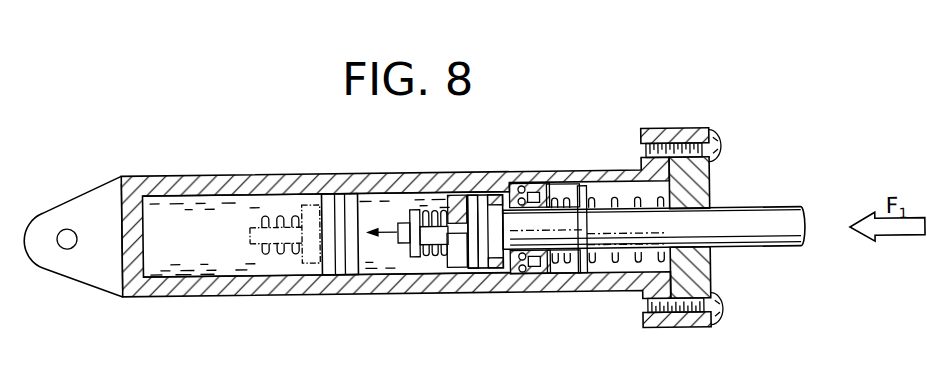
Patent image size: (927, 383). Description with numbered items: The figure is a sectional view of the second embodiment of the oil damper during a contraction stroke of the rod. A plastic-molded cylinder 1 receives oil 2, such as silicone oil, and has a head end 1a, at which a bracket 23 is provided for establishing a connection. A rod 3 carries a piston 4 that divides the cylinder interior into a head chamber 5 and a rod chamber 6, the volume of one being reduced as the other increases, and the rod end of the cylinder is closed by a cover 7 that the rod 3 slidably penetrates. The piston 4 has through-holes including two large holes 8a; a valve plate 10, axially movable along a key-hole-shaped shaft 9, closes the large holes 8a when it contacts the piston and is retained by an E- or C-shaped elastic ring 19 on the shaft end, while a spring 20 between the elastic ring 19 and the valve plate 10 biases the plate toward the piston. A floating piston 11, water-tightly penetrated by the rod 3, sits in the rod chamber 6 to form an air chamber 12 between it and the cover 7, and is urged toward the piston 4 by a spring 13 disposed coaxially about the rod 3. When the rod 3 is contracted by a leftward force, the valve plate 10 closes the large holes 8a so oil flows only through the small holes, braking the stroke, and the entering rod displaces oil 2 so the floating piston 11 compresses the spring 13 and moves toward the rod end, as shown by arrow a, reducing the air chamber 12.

The cylinder 1 is at (172, 191).
The head end 1a is at (117, 268).
The oil 2 is at (230, 260).
The rod 3 is at (760, 234).
The piston 4 is at (496, 194).
The head chamber 5 is at (180, 264).
The rod chamber 6 is at (510, 258).
The cover 7 is at (690, 138).
The large through-holes 8a is at (473, 194).
The shaft 9 is at (422, 258).
The valve plate 10 is at (440, 193).
The floating piston 11 is at (538, 274).
The air chamber 12 is at (605, 201).
The spring 13 is at (627, 265).
The elastic ring 19 is at (410, 258).
The spring 20 is at (438, 254).
The bracket 23 is at (65, 199).
The arrow a is at (575, 232).